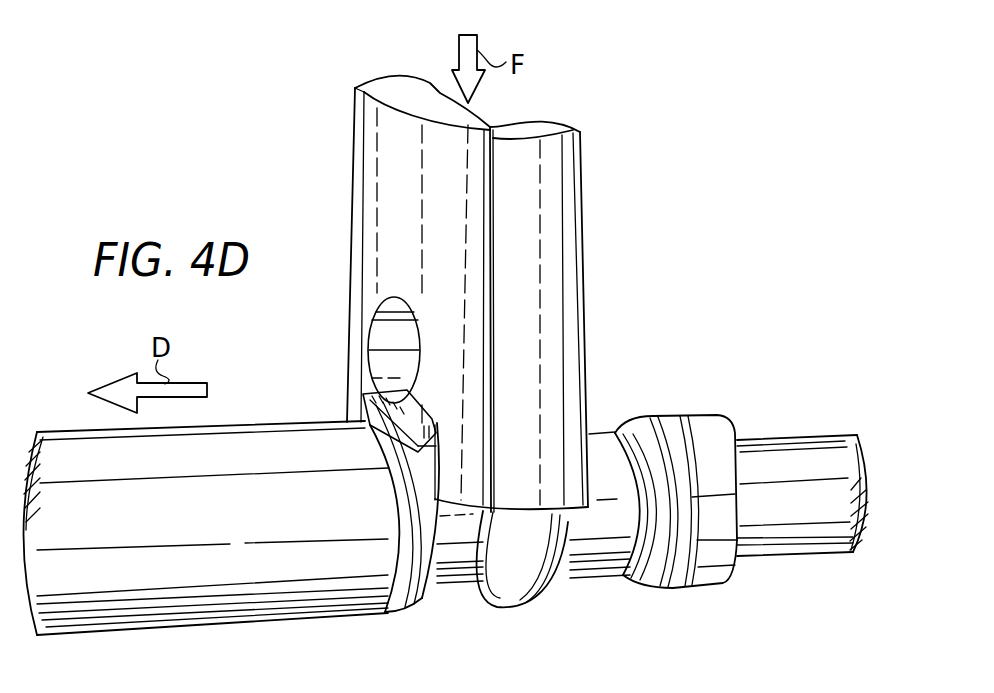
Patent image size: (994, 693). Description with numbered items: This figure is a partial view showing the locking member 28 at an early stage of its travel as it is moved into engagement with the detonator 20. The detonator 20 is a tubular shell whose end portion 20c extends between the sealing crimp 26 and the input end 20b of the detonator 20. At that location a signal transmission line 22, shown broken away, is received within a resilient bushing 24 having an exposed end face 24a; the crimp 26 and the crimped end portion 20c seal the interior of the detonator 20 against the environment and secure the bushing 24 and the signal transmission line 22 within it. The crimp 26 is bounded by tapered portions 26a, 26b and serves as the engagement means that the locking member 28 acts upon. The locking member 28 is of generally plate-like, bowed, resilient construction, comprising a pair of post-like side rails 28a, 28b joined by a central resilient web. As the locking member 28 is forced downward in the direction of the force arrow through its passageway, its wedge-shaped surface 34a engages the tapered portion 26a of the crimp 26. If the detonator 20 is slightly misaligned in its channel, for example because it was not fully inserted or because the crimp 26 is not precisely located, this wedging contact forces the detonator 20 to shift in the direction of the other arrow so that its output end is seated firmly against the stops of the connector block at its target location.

The detonator 20 is at (280, 596).
The input end 20b is at (659, 585).
The end portion 20c is at (597, 550).
The signal transmission line 22 is at (806, 452).
The resilient bushing 24 is at (703, 430).
The exposed end face 24a is at (724, 432).
The sealing crimp 26 is at (476, 532).
The tapered portion 26a is at (410, 558).
The tapered portion 26b is at (520, 580).
The locking member 28 is at (456, 294).
The side rail 28a is at (357, 200).
The side rail 28b is at (556, 371).
The wedge-shaped surface 34a is at (366, 412).